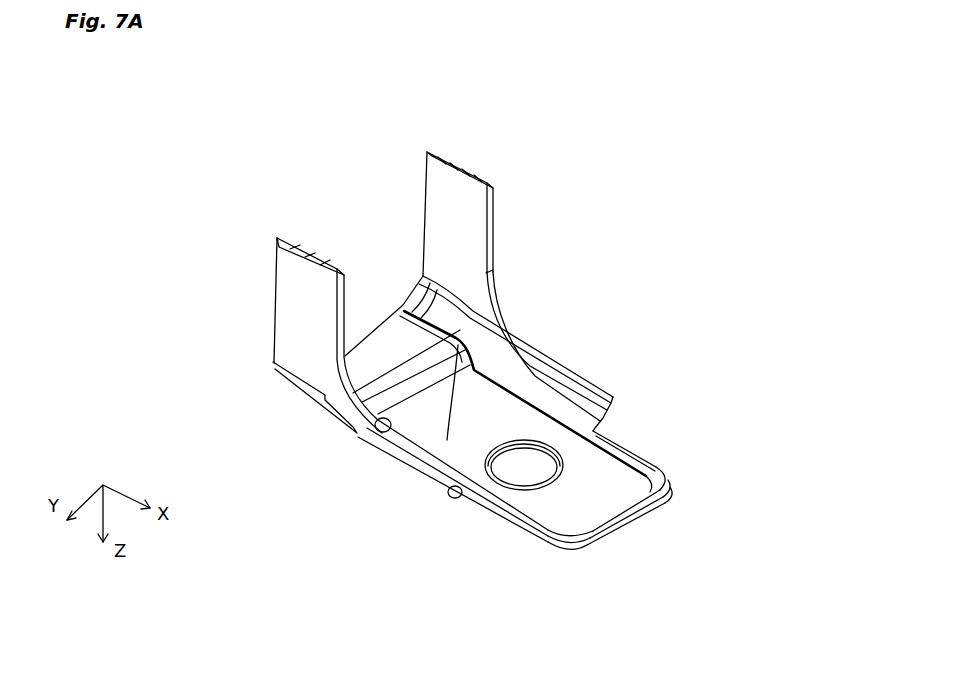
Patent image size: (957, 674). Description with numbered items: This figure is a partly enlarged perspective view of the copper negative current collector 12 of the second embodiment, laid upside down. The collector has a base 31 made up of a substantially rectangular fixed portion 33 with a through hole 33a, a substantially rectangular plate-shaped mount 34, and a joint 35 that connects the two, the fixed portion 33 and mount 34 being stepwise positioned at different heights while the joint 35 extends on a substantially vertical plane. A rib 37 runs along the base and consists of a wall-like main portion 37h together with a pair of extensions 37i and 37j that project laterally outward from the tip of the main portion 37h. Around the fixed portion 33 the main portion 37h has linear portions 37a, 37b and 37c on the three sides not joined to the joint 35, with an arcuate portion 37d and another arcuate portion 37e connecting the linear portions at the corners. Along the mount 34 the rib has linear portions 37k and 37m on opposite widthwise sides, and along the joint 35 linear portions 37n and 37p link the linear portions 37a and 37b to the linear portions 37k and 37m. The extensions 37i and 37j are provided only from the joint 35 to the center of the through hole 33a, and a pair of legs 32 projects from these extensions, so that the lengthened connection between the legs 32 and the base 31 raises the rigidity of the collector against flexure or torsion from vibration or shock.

The negative current collector 12 is at (613, 156).
The base 31 is at (507, 375).
The legs 32 is at (430, 178).
The fixed portion 33 is at (473, 393).
The through hole 33a is at (537, 486).
The mount 34 is at (450, 342).
The joint 35 is at (458, 342).
The rib 37 is at (553, 479).
The linear portion 37a is at (620, 447).
The linear portion 37b is at (513, 515).
The linear portion 37c is at (623, 512).
The arcuate portion 37d is at (662, 483).
The arcuate portion 37e is at (568, 534).
The main portion 37h is at (690, 421).
The extension 37i is at (573, 405).
The extension 37j is at (447, 440).
The linear portion 37k is at (398, 312).
The linear portion 37m is at (275, 367).
The linear portion 37n is at (463, 487).
The linear portion 37p is at (380, 443).